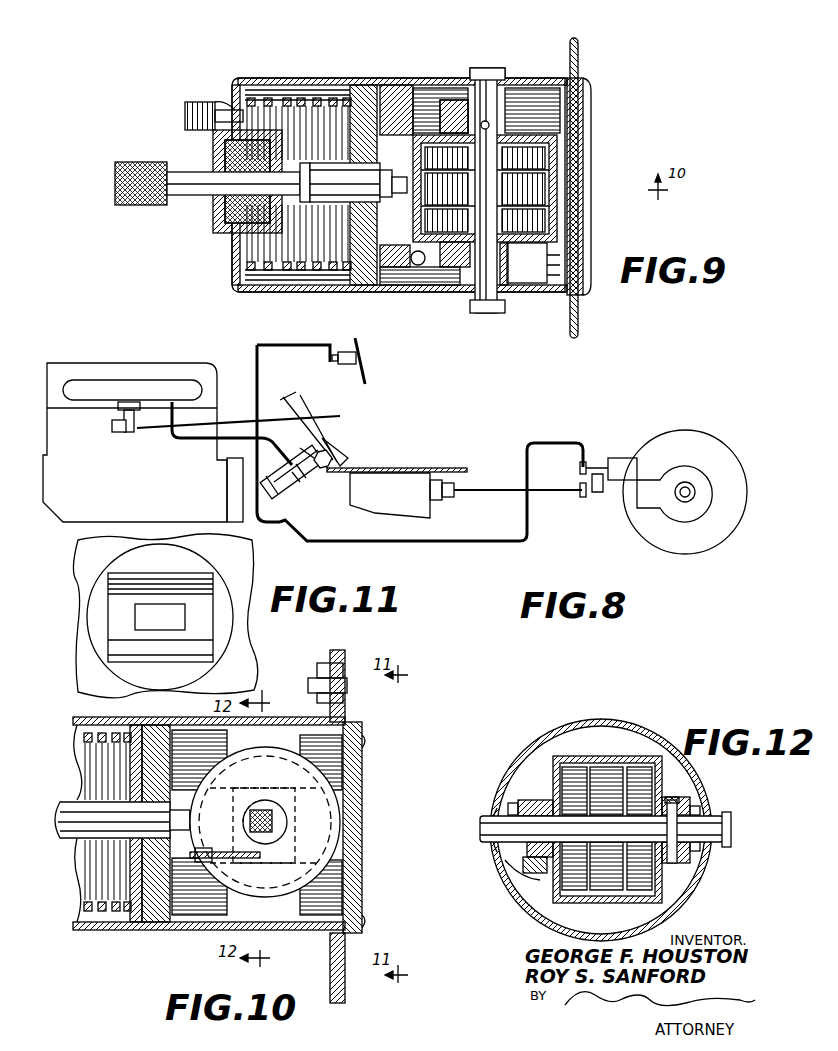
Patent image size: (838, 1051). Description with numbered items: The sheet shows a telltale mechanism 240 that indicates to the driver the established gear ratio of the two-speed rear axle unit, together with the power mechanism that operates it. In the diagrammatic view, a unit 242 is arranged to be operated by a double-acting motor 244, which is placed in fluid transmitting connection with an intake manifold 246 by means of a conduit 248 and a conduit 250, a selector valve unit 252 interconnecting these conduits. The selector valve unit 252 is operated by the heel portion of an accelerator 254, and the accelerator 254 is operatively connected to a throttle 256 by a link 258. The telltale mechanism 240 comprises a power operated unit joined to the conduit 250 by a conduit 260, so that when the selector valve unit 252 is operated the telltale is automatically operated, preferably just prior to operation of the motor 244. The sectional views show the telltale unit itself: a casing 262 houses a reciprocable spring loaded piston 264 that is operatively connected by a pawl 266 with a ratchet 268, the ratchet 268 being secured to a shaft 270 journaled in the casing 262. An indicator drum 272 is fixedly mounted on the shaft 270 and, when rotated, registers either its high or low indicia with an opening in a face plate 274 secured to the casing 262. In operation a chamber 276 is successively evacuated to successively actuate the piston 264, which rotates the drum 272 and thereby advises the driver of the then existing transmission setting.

In FIG. 9, the telltale mechanism 240 is at (425, 75).
In FIG. 8, the telltale mechanism 240 is at (353, 365).
In FIG. 8, the unit 242 is at (623, 497).
In FIG. 8, the double-acting motor 244 is at (620, 462).
In FIG. 8, the intake manifold 246 is at (110, 388).
In FIG. 8, the conduit 248 is at (197, 442).
In FIG. 8, the conduit 250 is at (448, 539).
In FIG. 8, the selector valve unit 252 is at (283, 488).
In FIG. 8, the accelerator 254 is at (318, 418).
In FIG. 8, the throttle 256 is at (112, 425).
In FIG. 8, the link 258 is at (158, 428).
In FIG. 8, the conduit 260 is at (258, 381).
In FIG. 9, the casing 262 is at (353, 77).
In FIG. 11, the casing 262 is at (245, 647).
In FIG. 10, the casing 262 is at (173, 930).
In FIG. 12, the casing 262 is at (614, 725).
In FIG. 9, the piston 264 is at (365, 284).
In FIG. 10, the piston 264 is at (130, 918).
In FIG. 9, the pawl 266 is at (430, 262).
In FIG. 10, the pawl 266 is at (343, 887).
In FIG. 12, the pawl 266 is at (532, 873).
In FIG. 9, the ratchet 268 is at (508, 262).
In FIG. 10, the ratchet 268 is at (282, 832).
In FIG. 12, the ratchet 268 is at (530, 803).
In FIG. 9, the shaft 270 is at (482, 315).
In FIG. 10, the shaft 270 is at (272, 820).
In FIG. 12, the shaft 270 is at (700, 832).
In FIG. 9, the indicator drum 272 is at (550, 190).
In FIG. 10, the indicator drum 272 is at (323, 776).
In FIG. 12, the indicator drum 272 is at (565, 752).
In FIG. 9, the face plate 274 is at (588, 148).
In FIG. 11, the face plate 274 is at (98, 622).
In FIG. 10, the face plate 274 is at (346, 850).
In FIG. 9, the chamber 276 is at (277, 268).
In FIG. 10, the chamber 276 is at (83, 882).